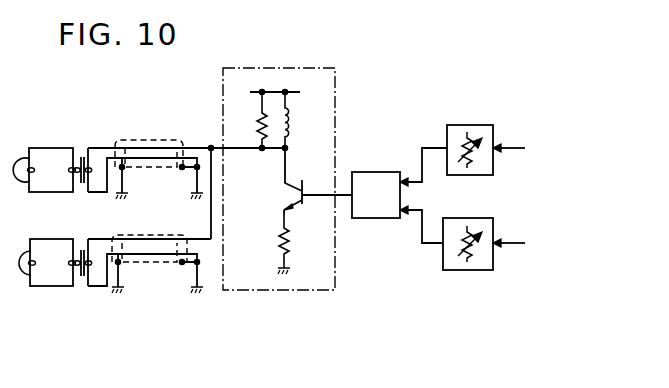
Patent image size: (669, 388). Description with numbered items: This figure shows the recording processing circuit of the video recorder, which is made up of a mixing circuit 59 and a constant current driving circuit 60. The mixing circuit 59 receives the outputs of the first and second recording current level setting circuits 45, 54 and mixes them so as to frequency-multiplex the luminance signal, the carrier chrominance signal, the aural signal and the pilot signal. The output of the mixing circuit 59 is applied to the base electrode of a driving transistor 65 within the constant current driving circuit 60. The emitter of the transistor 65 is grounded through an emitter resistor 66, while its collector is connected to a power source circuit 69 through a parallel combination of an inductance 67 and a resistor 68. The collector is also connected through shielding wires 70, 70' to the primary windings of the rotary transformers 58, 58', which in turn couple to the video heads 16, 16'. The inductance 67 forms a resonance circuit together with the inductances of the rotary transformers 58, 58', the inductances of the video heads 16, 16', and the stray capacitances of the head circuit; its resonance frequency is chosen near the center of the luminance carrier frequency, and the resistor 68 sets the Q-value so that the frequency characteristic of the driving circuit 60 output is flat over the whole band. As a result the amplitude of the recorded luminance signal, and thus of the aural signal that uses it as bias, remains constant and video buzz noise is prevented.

The video head 16 is at (44, 153).
The rotary transformer 58 is at (85, 151).
The shielding wire 70 is at (149, 133).
The video head 16' is at (45, 281).
The rotary transformer 58' is at (88, 281).
The shielding wire 70' is at (149, 278).
The constant current driving circuit 60 is at (338, 85).
The power source circuit 69 is at (275, 90).
The resistor 68 is at (258, 110).
The inductance 67 is at (292, 111).
The driving transistor 65 is at (304, 184).
The emitter resistor 66 is at (287, 246).
The mixing circuit 59 is at (378, 170).
The first recording current level setting circuit 45 is at (475, 125).
The second recording current level setting circuit 54 is at (472, 218).